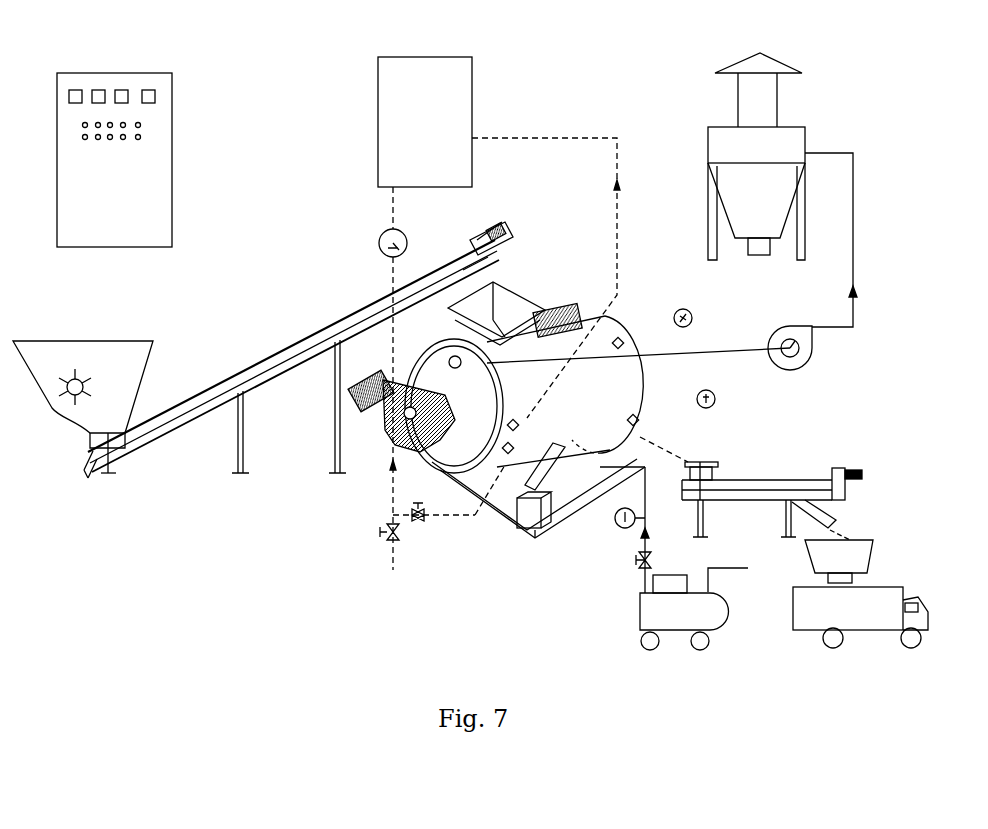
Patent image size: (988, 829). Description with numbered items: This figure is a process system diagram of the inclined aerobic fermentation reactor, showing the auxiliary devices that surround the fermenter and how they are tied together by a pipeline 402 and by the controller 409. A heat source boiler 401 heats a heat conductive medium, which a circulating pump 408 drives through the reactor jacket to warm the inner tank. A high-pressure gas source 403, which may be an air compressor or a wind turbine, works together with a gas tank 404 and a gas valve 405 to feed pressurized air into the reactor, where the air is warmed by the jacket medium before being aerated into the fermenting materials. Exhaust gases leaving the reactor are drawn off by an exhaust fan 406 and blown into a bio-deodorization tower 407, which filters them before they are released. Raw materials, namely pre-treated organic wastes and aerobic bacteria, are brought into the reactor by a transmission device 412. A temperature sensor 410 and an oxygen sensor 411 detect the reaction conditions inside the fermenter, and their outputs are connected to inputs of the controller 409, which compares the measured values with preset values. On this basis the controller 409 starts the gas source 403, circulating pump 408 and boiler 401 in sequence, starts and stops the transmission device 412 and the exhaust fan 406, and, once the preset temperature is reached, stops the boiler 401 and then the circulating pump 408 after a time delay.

The heat source boiler 401 is at (465, 65).
The pipeline 402 is at (620, 410).
The high-pressure gas source 403 is at (694, 600).
The gas tank 404 is at (835, 594).
The gas valve 405 is at (632, 562).
The exhaust fan 406 is at (812, 261).
The bio-deodorization tower 407 is at (790, 140).
The circulating pump 408 is at (379, 243).
The controller 409 is at (107, 73).
The temperature sensor 410 is at (633, 420).
The oxygen sensor 411 is at (618, 343).
The transmission device 412 is at (306, 335).